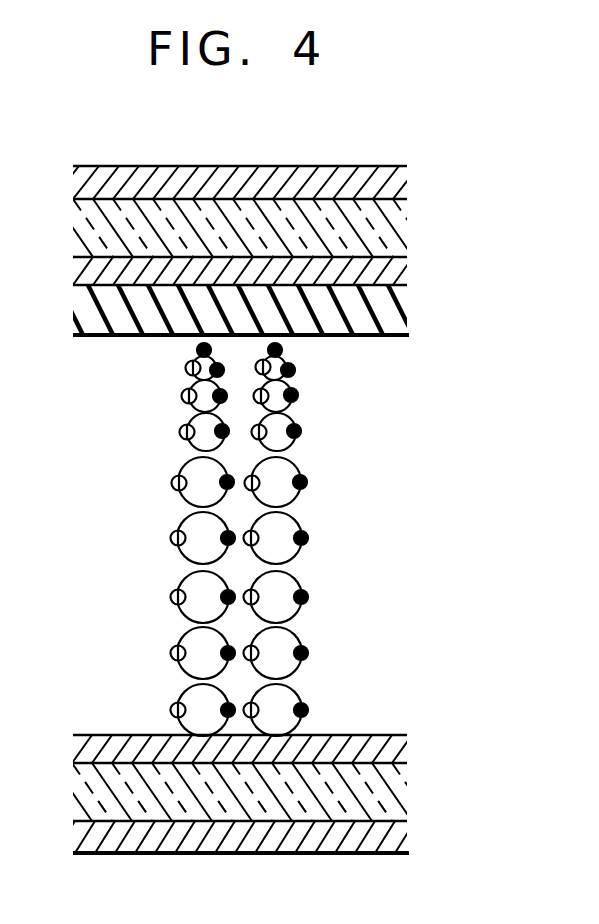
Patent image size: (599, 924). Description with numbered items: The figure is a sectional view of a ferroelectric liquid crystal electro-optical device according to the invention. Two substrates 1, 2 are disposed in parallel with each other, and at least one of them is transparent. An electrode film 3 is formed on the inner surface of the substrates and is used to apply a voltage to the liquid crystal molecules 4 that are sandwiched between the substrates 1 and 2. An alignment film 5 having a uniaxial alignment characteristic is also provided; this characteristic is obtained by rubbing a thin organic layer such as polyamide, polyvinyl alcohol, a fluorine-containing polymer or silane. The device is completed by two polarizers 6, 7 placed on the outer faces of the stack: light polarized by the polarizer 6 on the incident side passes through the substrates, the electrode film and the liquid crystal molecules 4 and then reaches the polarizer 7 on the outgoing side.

The substrate 1 is at (392, 232).
The substrate 2 is at (392, 797).
The electrode film 3 is at (395, 272).
The liquid crystal molecules 4 is at (303, 484).
The alignment film 5 is at (400, 312).
The polarizer 6 is at (387, 177).
The polarizer 7 is at (392, 838).